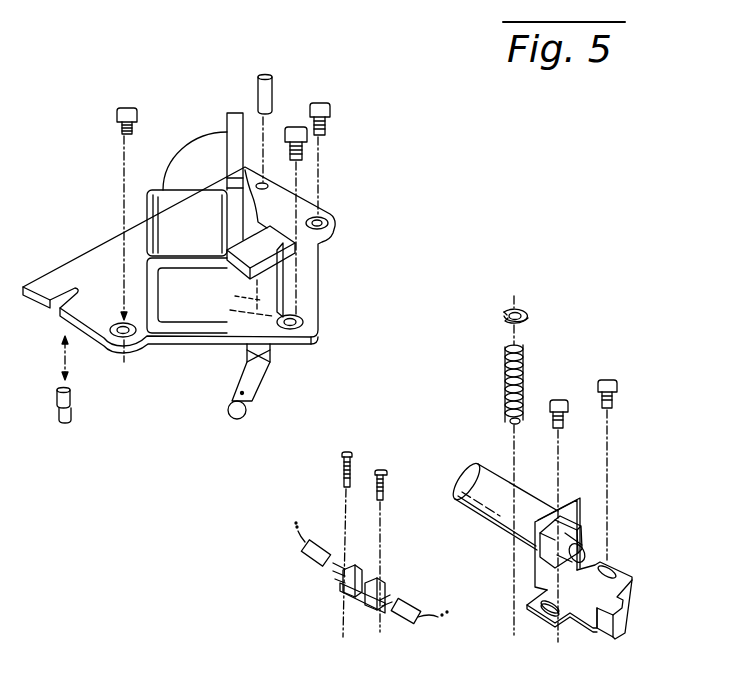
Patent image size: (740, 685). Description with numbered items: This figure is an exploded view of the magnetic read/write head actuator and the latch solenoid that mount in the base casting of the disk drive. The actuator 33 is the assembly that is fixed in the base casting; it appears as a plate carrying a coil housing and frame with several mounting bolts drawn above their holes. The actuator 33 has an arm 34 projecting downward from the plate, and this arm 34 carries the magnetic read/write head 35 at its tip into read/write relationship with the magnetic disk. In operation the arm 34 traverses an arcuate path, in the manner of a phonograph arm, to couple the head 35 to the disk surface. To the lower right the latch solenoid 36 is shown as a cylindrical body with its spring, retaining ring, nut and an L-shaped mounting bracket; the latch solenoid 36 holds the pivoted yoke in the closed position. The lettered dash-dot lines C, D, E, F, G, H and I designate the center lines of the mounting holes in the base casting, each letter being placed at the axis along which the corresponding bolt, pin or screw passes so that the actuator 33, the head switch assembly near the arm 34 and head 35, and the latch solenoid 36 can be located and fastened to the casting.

The actuator 33 is at (87, 252).
The arm 34 is at (262, 382).
The magnetic read/write head 35 is at (245, 417).
The latch solenoid 36 is at (473, 478).
The center line of mounting hole C is at (124, 158).
The center line of mounting hole D is at (298, 293).
The center line of mounting hole E is at (318, 176).
The center line of mounting hole F is at (558, 447).
The center line of mounting hole G is at (608, 455).
The center line of mounting hole H is at (382, 513).
The center line of mounting hole I is at (343, 503).